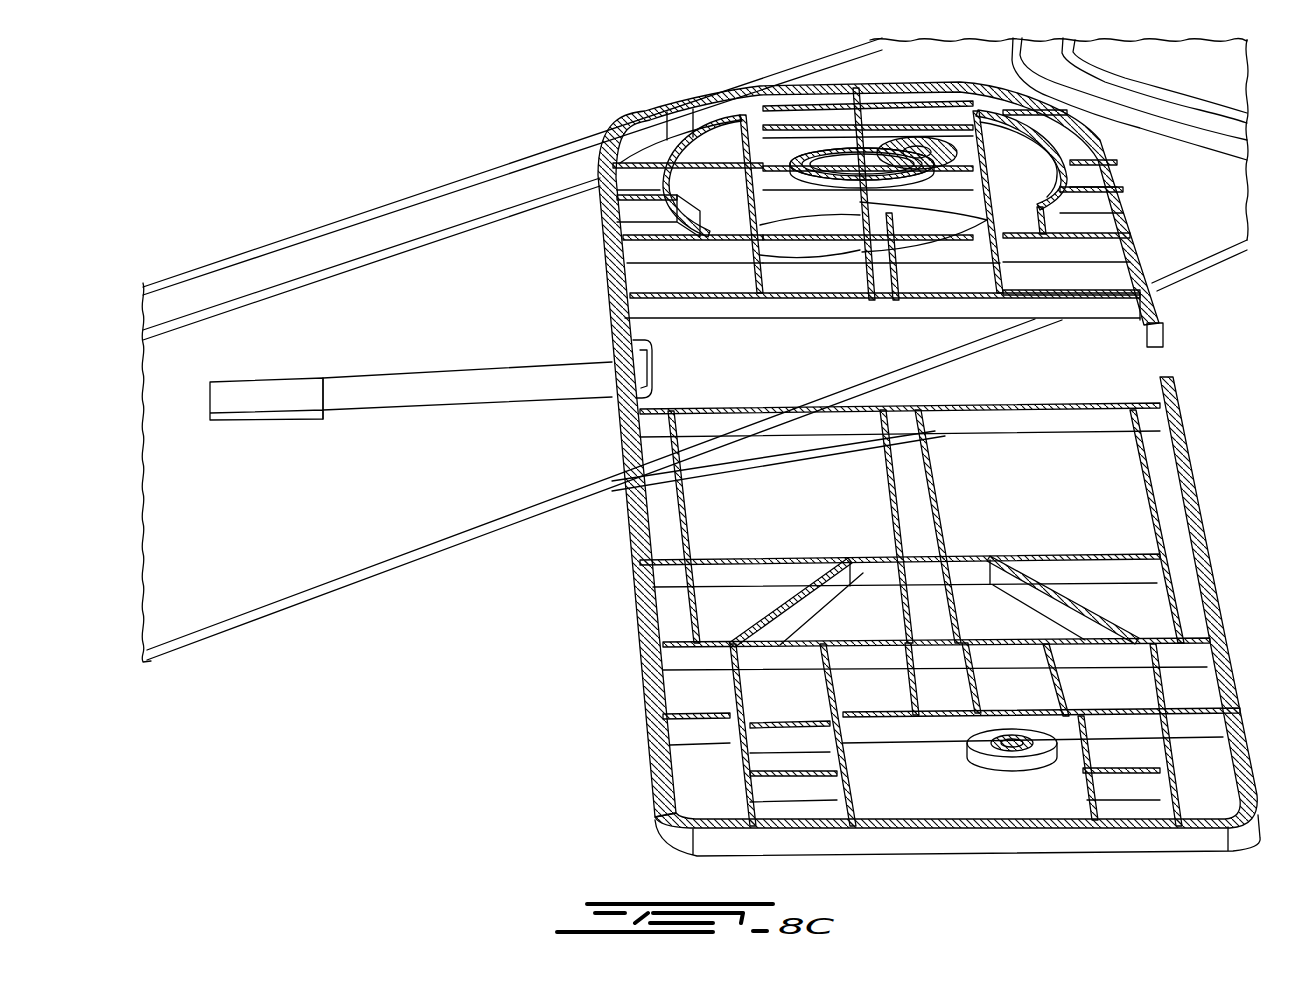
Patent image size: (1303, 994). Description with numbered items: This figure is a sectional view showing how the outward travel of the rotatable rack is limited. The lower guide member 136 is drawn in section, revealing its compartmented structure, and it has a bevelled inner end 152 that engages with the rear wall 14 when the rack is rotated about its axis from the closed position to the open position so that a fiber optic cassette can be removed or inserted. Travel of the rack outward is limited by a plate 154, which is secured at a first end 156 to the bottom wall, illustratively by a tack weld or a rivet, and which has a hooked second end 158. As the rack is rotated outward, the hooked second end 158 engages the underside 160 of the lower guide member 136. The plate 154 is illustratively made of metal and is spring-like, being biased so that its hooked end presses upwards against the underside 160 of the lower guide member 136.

The rear wall 14 is at (820, 62).
The lower guide member 136 is at (892, 438).
The bevelled inner end 152 is at (649, 125).
The plate 154 is at (423, 387).
The first end 156 is at (263, 393).
The hooked second end 158 is at (660, 414).
The underside 160 is at (672, 403).